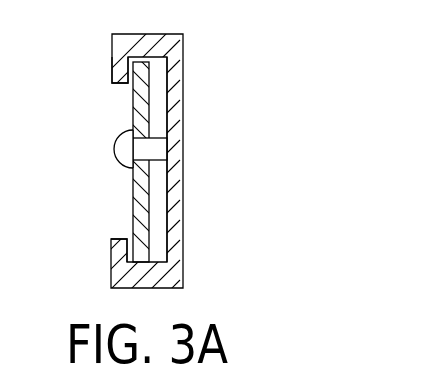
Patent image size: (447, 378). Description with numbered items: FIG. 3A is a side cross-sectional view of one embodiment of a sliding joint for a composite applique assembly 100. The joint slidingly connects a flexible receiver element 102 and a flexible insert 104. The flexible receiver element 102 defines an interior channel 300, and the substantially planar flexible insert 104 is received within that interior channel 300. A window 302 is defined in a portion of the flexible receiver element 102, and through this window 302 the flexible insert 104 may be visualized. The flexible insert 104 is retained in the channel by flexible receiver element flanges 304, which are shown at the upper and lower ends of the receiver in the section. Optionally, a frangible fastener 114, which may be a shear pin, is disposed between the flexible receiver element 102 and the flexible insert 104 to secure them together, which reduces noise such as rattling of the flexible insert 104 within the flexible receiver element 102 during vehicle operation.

The applique assembly 100 is at (283, 143).
The flexible receiver element 102 is at (183, 70).
The flexible insert 104 is at (149, 225).
The frangible fastener 114 is at (114, 150).
The interior channel 300 is at (128, 238).
The window 302 is at (112, 107).
The flexible receiver element flanges 304 is at (112, 70).